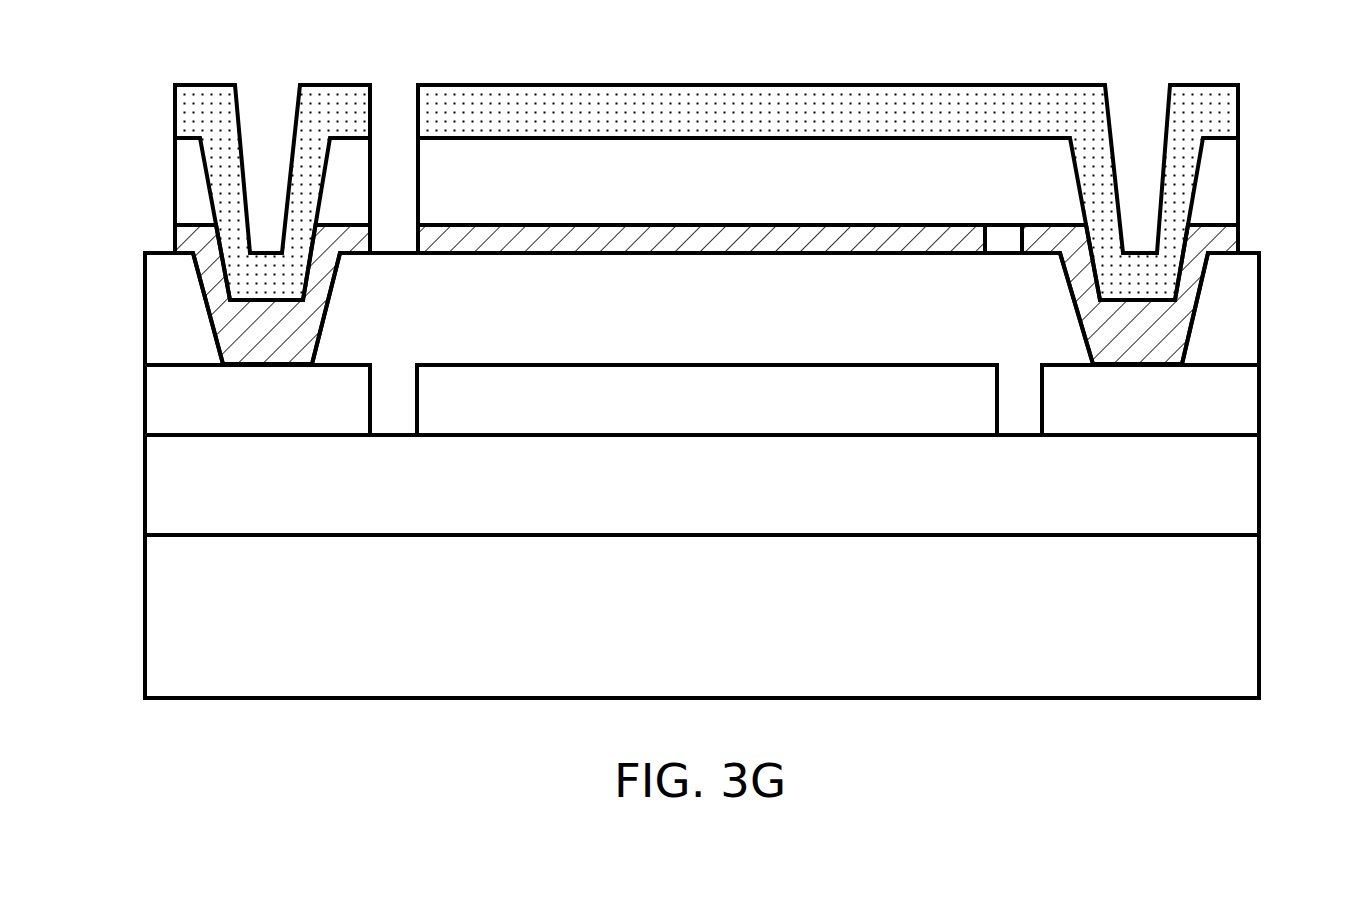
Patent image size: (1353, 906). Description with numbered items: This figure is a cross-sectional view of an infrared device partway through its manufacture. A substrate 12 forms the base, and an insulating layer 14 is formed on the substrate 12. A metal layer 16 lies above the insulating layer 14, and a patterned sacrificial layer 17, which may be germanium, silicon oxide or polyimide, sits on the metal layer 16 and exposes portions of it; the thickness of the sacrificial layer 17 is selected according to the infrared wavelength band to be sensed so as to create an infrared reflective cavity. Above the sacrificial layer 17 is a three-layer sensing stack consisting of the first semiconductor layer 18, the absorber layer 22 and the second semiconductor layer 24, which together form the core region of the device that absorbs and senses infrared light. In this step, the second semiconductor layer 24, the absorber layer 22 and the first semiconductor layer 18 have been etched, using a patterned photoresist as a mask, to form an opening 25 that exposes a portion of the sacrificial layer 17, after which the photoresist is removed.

The substrate 12 is at (1237, 612).
The insulating layer 14 is at (1237, 483).
The metal layer 16 is at (1237, 403).
The sacrificial layer 17 is at (1237, 307).
The first semiconductor layer 18 is at (850, 243).
The absorber layer 22 is at (622, 183).
The second semiconductor layer 24 is at (760, 112).
The opening 25 is at (420, 181).